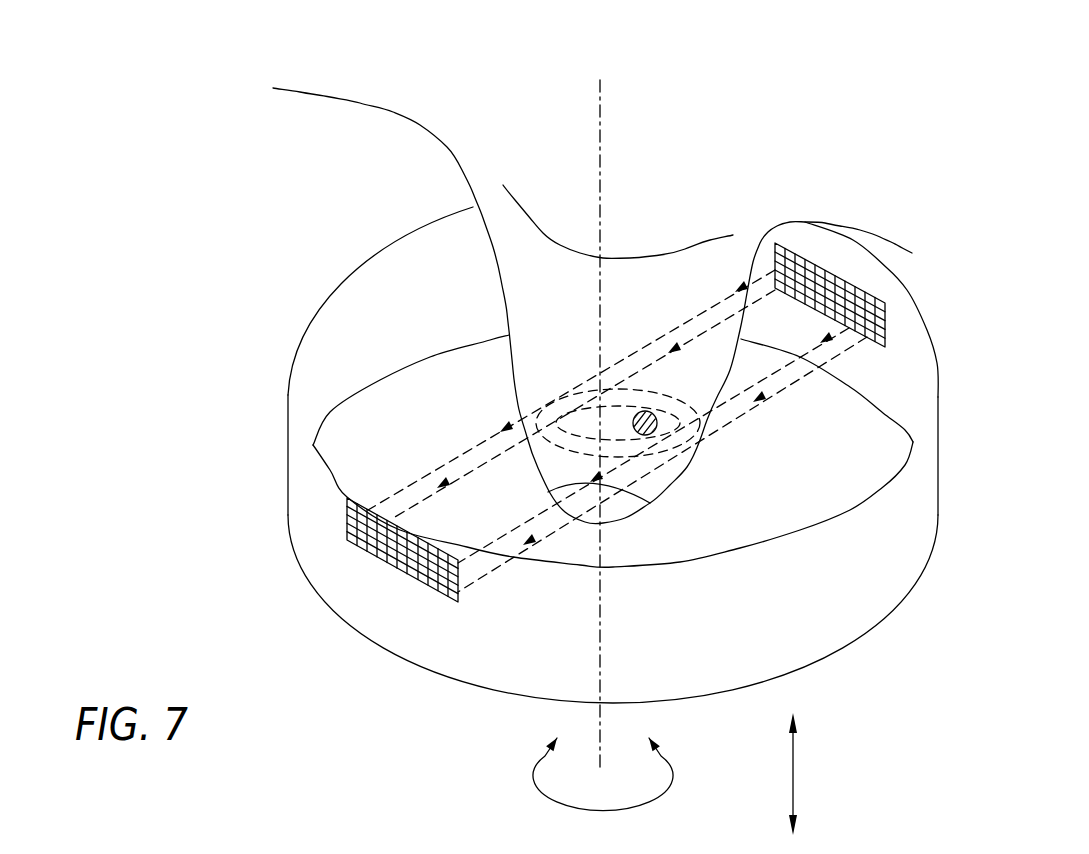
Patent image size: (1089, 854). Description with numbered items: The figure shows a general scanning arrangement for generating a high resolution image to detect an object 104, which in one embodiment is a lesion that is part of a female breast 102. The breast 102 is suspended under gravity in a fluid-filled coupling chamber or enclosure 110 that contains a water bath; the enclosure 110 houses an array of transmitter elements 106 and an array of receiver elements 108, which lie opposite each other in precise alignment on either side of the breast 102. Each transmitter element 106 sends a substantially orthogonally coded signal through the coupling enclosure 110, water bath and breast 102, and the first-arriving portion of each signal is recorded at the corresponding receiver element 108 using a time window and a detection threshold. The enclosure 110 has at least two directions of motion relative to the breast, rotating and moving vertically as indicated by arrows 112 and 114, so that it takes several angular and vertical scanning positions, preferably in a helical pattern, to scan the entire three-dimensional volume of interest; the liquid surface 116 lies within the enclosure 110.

The female breast 102 is at (473, 193).
The object 104 is at (655, 413).
The array of transmitter elements 106 is at (860, 292).
The array of receiver elements 108 is at (377, 542).
The fluid-filled coupling chamber/enclosure 110 is at (818, 662).
The rotation arrow 112 is at (547, 797).
The vertical motion arrow 114 is at (793, 762).
The inner surface / sample plane 116 is at (398, 423).